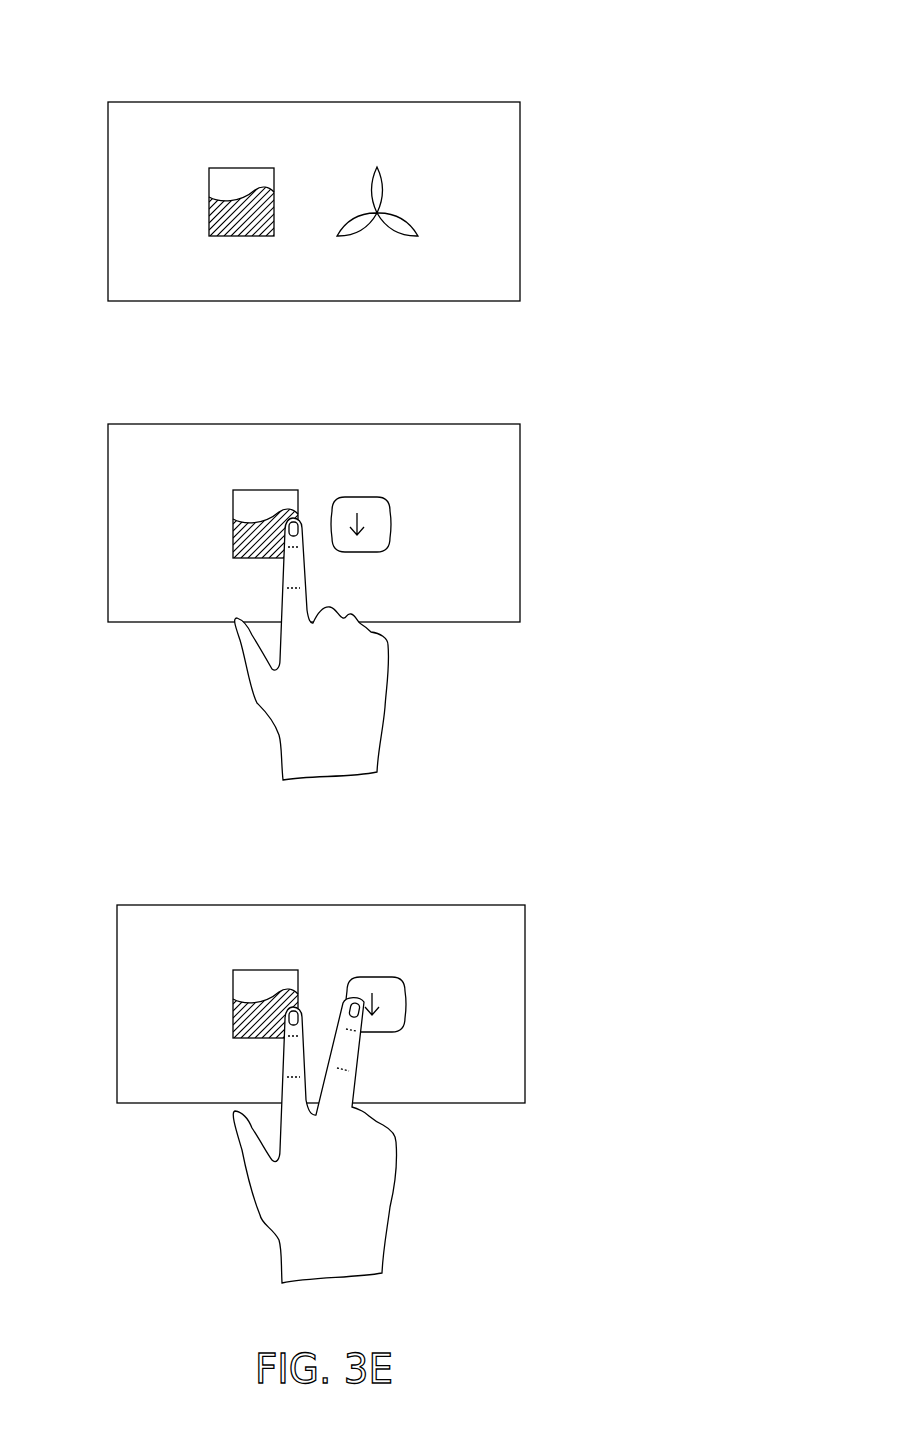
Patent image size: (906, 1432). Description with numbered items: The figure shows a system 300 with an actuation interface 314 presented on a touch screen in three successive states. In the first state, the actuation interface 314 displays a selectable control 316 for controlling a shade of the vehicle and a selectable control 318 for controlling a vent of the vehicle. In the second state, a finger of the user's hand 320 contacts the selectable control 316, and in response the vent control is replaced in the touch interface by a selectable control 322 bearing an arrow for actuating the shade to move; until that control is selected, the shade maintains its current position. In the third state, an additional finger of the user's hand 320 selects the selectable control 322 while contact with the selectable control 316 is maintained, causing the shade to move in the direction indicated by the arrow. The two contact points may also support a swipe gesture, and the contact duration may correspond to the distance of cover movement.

The system 300 is at (142, 58).
The actuation interface 314 is at (488, 80).
The selectable control 316 is at (225, 168).
The selectable control 318 is at (383, 167).
The user's hand 320 is at (268, 723).
The selectable control 322 is at (360, 496).